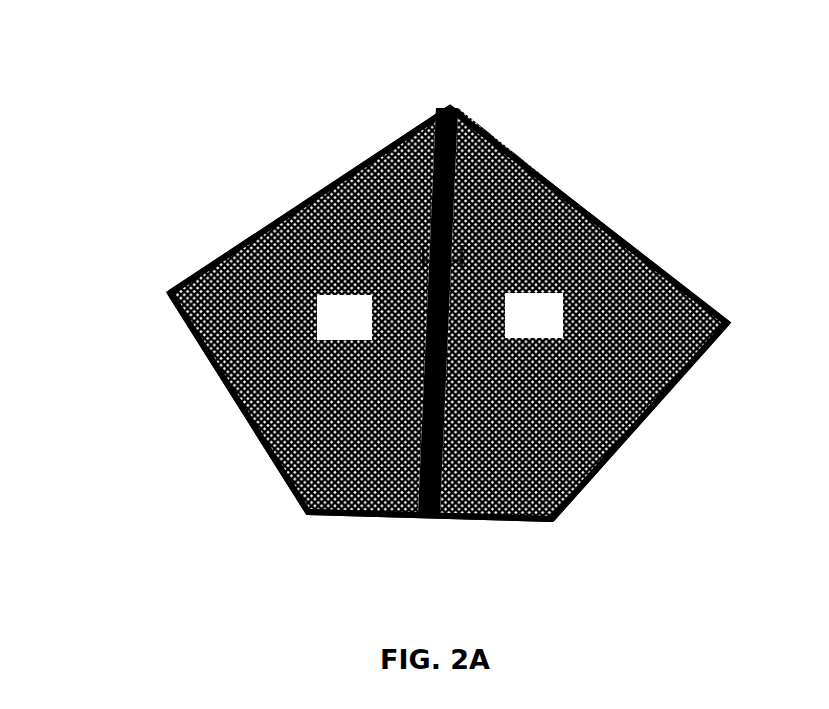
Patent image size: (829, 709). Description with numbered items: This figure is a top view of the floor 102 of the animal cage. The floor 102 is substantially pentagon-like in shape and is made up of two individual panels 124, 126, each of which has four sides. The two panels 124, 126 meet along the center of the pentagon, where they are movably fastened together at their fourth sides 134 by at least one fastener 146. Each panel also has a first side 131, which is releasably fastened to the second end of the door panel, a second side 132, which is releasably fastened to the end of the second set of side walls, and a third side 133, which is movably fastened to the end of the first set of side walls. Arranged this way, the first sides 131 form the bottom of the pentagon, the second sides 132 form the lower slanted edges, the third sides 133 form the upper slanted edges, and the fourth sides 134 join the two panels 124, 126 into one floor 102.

The floor 102 is at (140, 112).
The panel 124 is at (370, 336).
The panel 126 is at (560, 334).
The first side 131 is at (360, 515).
The second side 132 is at (242, 415).
The third side 133 is at (295, 208).
The fourth side 134 is at (432, 225).
The fastener 146 is at (462, 261).